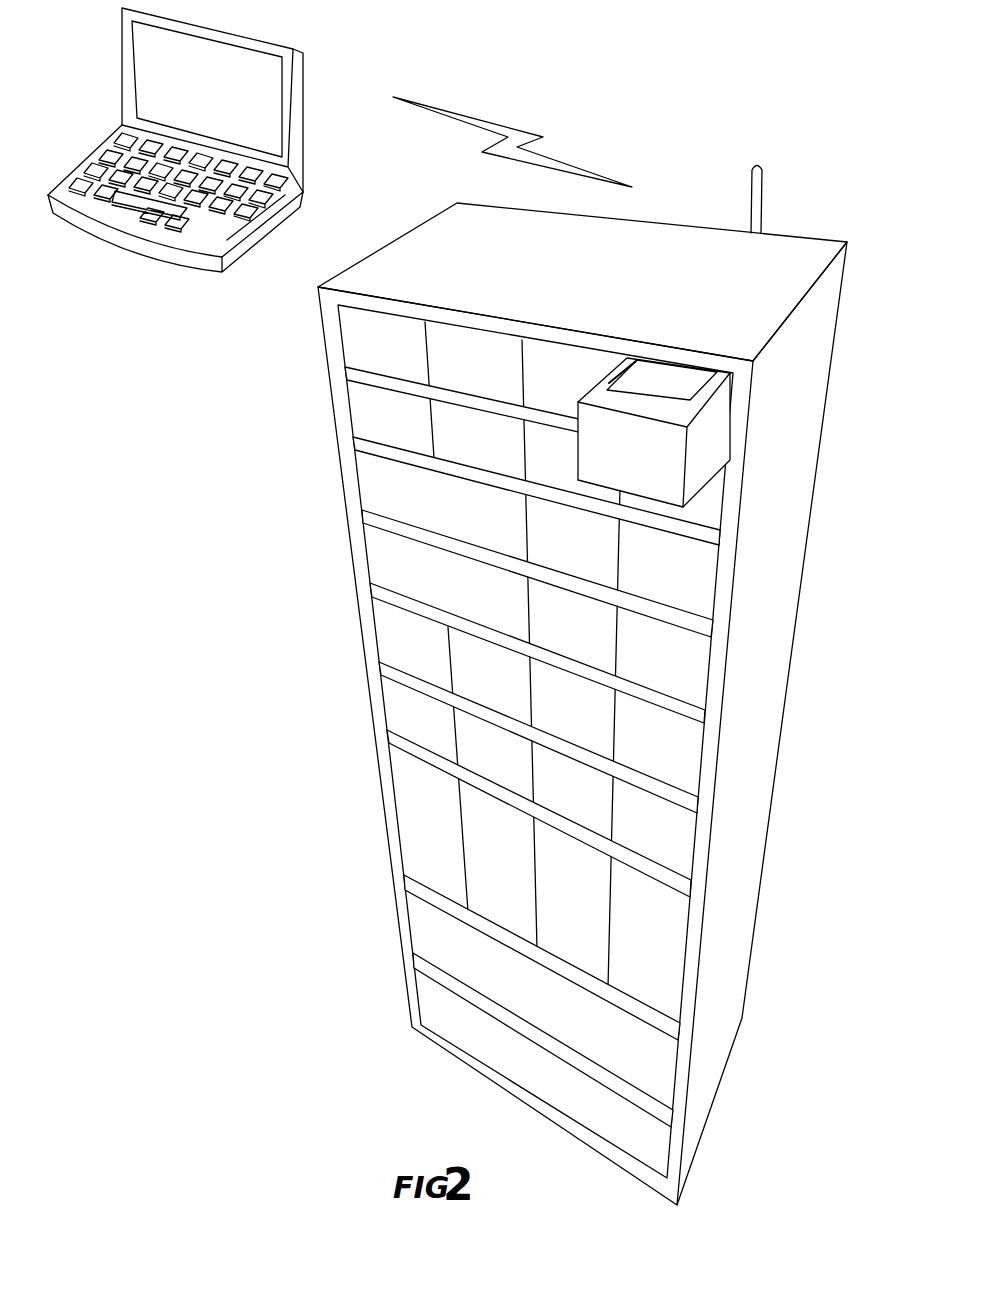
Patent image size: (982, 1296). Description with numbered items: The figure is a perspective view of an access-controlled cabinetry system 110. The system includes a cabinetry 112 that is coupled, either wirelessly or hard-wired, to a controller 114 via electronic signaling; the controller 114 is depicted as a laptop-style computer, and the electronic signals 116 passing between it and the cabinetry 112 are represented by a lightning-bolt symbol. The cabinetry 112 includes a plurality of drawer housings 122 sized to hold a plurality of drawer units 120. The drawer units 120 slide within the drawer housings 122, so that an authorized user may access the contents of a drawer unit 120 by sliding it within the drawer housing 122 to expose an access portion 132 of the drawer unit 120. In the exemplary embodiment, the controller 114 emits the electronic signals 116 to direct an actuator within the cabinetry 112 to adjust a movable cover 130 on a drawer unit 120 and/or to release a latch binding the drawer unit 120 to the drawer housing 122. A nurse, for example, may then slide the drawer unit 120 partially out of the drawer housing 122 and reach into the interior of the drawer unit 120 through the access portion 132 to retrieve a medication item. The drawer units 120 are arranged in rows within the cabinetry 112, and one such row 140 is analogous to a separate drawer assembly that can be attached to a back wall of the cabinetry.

The access-controlled cabinetry system 110 is at (704, 118).
The cabinetry 112 is at (821, 247).
The controller 114 is at (127, 80).
The electronic signals 116 is at (485, 125).
The drawer unit 120 is at (368, 350).
The drawer housing 122 is at (470, 325).
The movable cover 130 is at (667, 368).
The access portion 132 is at (632, 378).
The row 140 is at (680, 663).